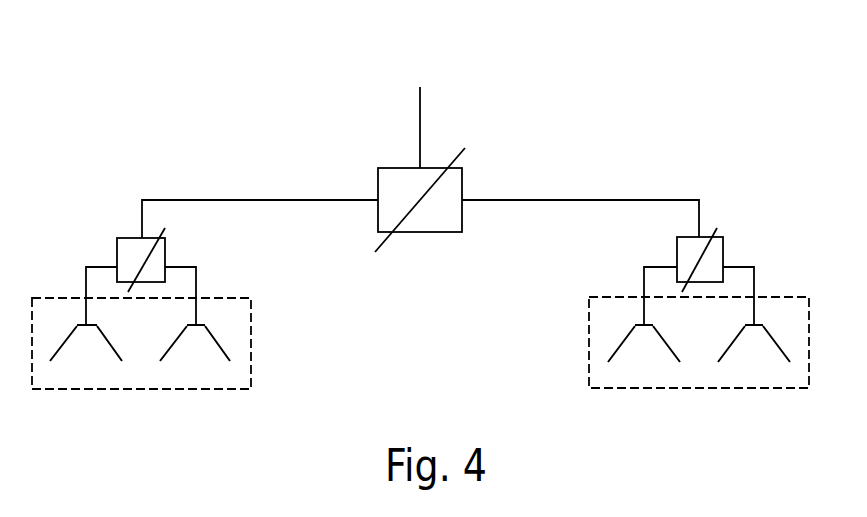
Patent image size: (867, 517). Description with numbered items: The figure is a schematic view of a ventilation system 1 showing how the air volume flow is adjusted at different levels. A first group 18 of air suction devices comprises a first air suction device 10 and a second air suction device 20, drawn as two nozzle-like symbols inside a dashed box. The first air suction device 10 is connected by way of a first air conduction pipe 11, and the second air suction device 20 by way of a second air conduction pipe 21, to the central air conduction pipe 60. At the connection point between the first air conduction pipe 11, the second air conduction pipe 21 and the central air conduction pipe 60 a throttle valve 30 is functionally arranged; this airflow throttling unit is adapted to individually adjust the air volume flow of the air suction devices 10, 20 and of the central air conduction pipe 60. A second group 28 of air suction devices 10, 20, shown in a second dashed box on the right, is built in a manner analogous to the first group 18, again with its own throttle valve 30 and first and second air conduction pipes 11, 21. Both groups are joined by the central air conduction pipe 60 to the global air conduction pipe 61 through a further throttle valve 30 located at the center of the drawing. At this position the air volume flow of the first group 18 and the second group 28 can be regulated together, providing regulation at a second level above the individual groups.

The fluid delivery system 1 is at (181, 128).
The central air conduction pipe 60 is at (220, 199).
The global air conduction pipe 61 is at (421, 103).
The throttle valve 30 is at (167, 255).
The first air conduction pipe 11 is at (82, 270).
The second air conduction pipe 21 is at (197, 287).
The first air suction device 10 is at (110, 348).
The second air suction device 20 is at (217, 342).
The first group of air suction devices 18 is at (145, 391).
The second group of air suction devices 28 is at (638, 390).